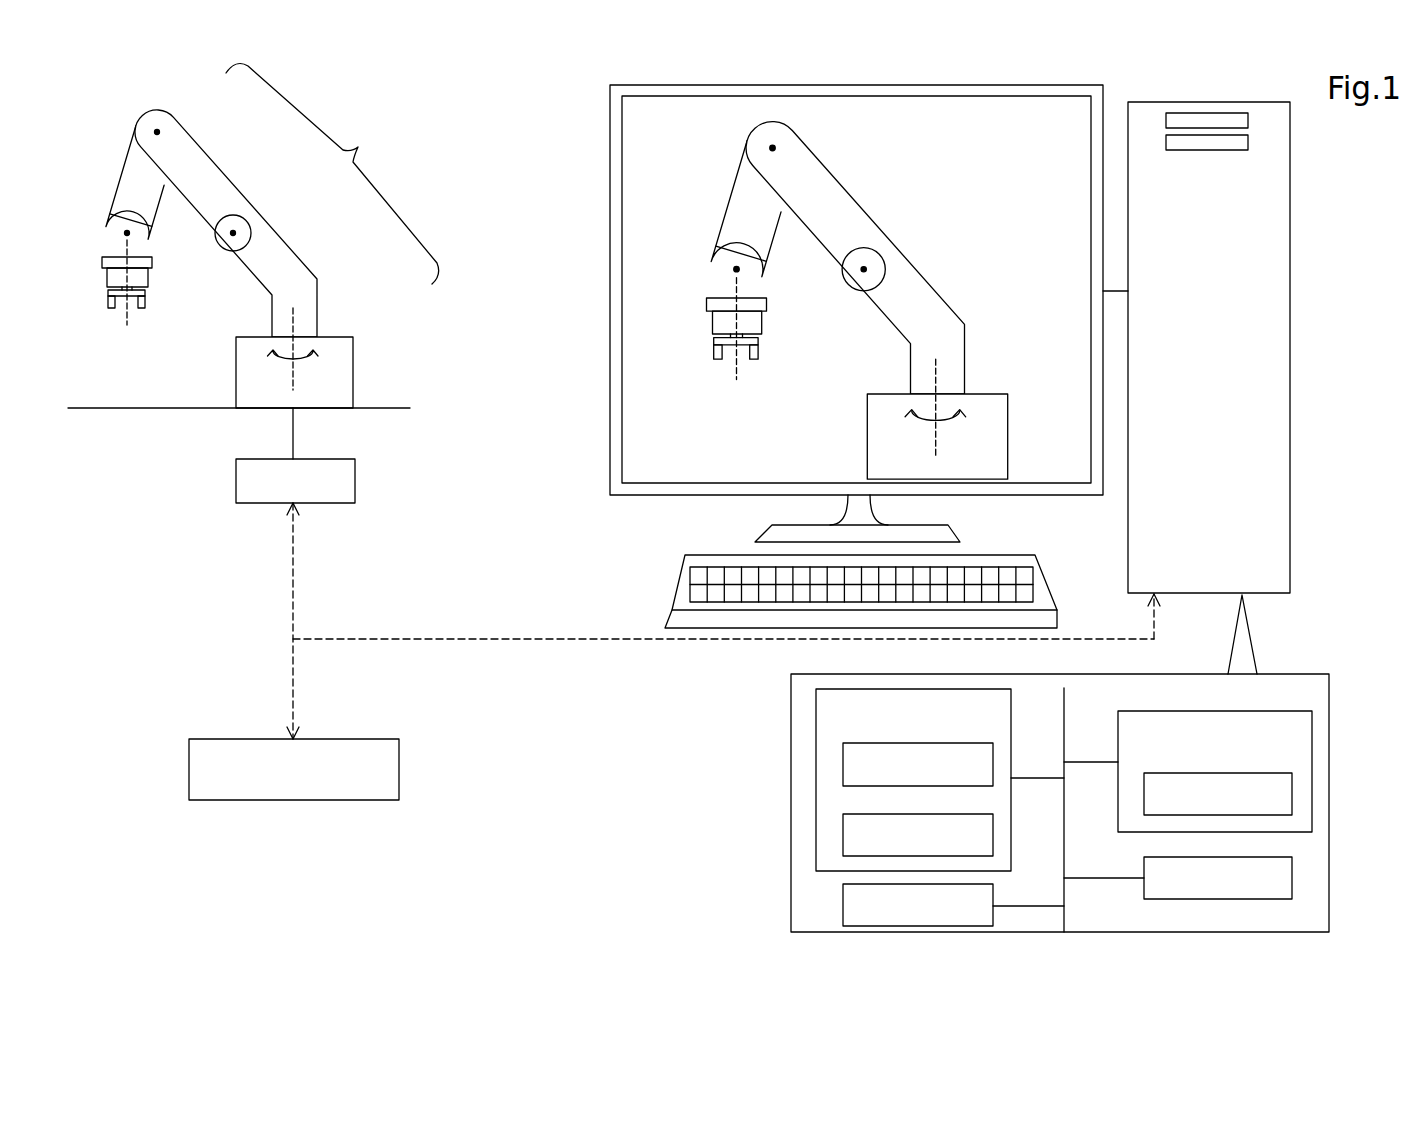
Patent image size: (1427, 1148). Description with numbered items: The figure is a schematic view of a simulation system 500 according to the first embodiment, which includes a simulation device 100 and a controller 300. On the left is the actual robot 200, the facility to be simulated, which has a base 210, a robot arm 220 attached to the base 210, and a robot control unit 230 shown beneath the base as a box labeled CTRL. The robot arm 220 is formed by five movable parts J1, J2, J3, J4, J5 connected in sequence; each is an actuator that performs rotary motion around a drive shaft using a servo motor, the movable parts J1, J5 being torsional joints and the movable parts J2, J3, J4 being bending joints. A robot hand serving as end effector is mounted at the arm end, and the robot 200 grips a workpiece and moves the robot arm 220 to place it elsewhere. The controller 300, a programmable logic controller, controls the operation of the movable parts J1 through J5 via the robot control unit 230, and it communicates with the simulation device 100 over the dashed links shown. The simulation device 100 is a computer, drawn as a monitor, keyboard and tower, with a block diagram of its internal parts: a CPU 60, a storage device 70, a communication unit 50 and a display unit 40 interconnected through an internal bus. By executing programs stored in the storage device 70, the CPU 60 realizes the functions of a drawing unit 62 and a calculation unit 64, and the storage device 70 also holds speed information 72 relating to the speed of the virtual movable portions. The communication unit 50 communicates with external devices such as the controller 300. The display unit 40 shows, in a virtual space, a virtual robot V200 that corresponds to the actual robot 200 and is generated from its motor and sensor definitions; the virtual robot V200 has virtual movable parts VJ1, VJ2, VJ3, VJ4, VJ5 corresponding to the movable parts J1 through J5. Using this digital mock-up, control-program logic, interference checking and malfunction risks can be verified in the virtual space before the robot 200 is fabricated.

The display unit 40 is at (609, 127).
The communication unit 50 is at (1292, 877).
The CPU 60 is at (815, 720).
The drawing unit 62 is at (843, 767).
The calculation unit 64 is at (843, 836).
The storage device 70 is at (1312, 716).
The speed information 72 is at (1292, 794).
The simulation device 100 is at (1218, 102).
The robot 200 is at (253, 236).
The base 210 is at (354, 355).
The robot arm 220 is at (223, 178).
The robot control unit 230 is at (322, 459).
The controller 300 is at (355, 739).
The simulation system 500 is at (180, 827).
The movable part J1 is at (296, 322).
The movable part J2 is at (236, 233).
The movable part J3 is at (160, 132).
The movable part J4 is at (130, 233).
The movable part J5 is at (126, 304).
The virtual robot V200 is at (730, 198).
The virtual movable part VJ1 is at (938, 375).
The virtual movable part VJ2 is at (867, 271).
The virtual movable part VJ3 is at (774, 149).
The virtual movable part VJ4 is at (739, 272).
The virtual movable part VJ5 is at (735, 341).